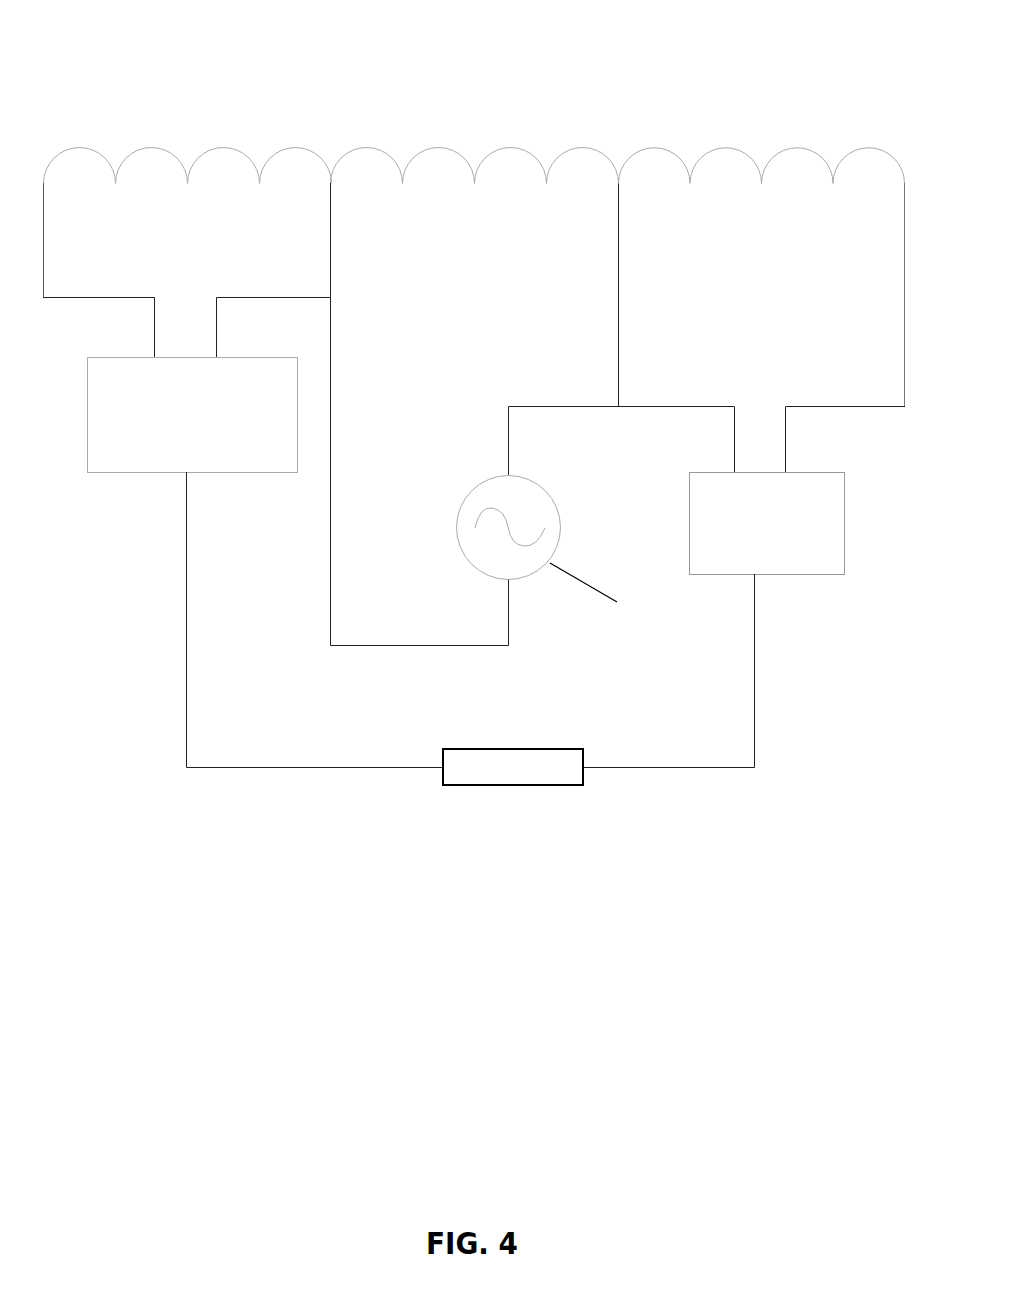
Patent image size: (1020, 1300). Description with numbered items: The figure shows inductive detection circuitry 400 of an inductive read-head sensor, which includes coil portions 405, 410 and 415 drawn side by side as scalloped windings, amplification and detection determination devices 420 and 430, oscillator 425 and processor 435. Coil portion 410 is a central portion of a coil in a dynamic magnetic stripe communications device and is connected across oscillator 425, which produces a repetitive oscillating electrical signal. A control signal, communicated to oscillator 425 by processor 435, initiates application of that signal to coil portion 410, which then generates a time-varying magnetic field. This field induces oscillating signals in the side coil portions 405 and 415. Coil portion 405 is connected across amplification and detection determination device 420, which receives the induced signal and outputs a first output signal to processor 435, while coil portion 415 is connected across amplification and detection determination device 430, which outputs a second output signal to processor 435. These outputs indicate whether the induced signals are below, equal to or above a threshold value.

The inductive detection circuitry 400 is at (497, 33).
The coil portion 405 is at (147, 148).
The coil portion 410 is at (452, 149).
The coil portion 415 is at (734, 148).
The amplification and detection determination device 420 is at (87, 394).
The oscillator 425 is at (461, 525).
The amplification and detection determination device 430 is at (689, 518).
The processor 435 is at (513, 786).